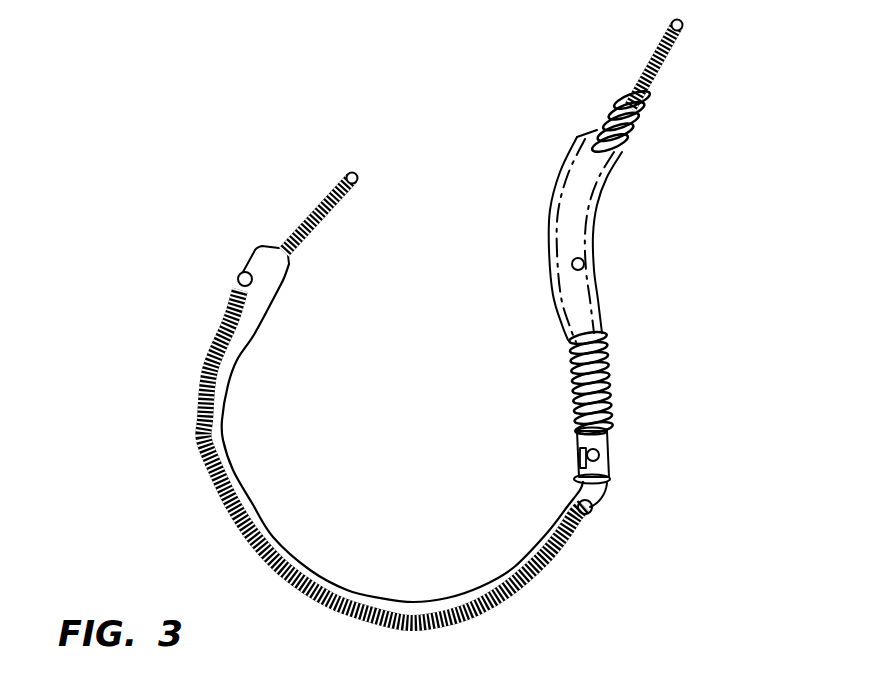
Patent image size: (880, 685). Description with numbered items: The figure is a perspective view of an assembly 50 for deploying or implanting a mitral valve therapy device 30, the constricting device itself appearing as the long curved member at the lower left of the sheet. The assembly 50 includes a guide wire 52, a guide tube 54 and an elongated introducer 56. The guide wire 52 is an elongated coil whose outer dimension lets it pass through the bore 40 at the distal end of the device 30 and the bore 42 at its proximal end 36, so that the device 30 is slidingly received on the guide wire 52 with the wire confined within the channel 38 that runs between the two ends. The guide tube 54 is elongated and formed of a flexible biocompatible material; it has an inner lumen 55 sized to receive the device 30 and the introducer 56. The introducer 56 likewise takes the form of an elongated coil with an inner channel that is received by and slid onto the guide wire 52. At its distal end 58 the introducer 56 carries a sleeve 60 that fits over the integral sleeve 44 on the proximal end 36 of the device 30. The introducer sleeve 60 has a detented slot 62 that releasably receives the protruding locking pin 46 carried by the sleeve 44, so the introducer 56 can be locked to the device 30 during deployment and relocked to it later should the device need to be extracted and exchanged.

The mitral valve therapy device 30 is at (263, 522).
The proximal end 36 is at (560, 493).
The channel 38 is at (230, 527).
The bore 40 is at (237, 277).
The bore 42 is at (590, 510).
The integral sleeve 44 is at (605, 478).
The locking pin 46 is at (598, 457).
The assembly 50 is at (673, 313).
The guide wire 52 is at (313, 213).
The guide tube 54 is at (595, 230).
The inner lumen 55 is at (584, 263).
The introducer 56 is at (635, 123).
The distal end 58 is at (573, 440).
The introducer sleeve 60 is at (607, 443).
The detented slot 62 is at (578, 463).